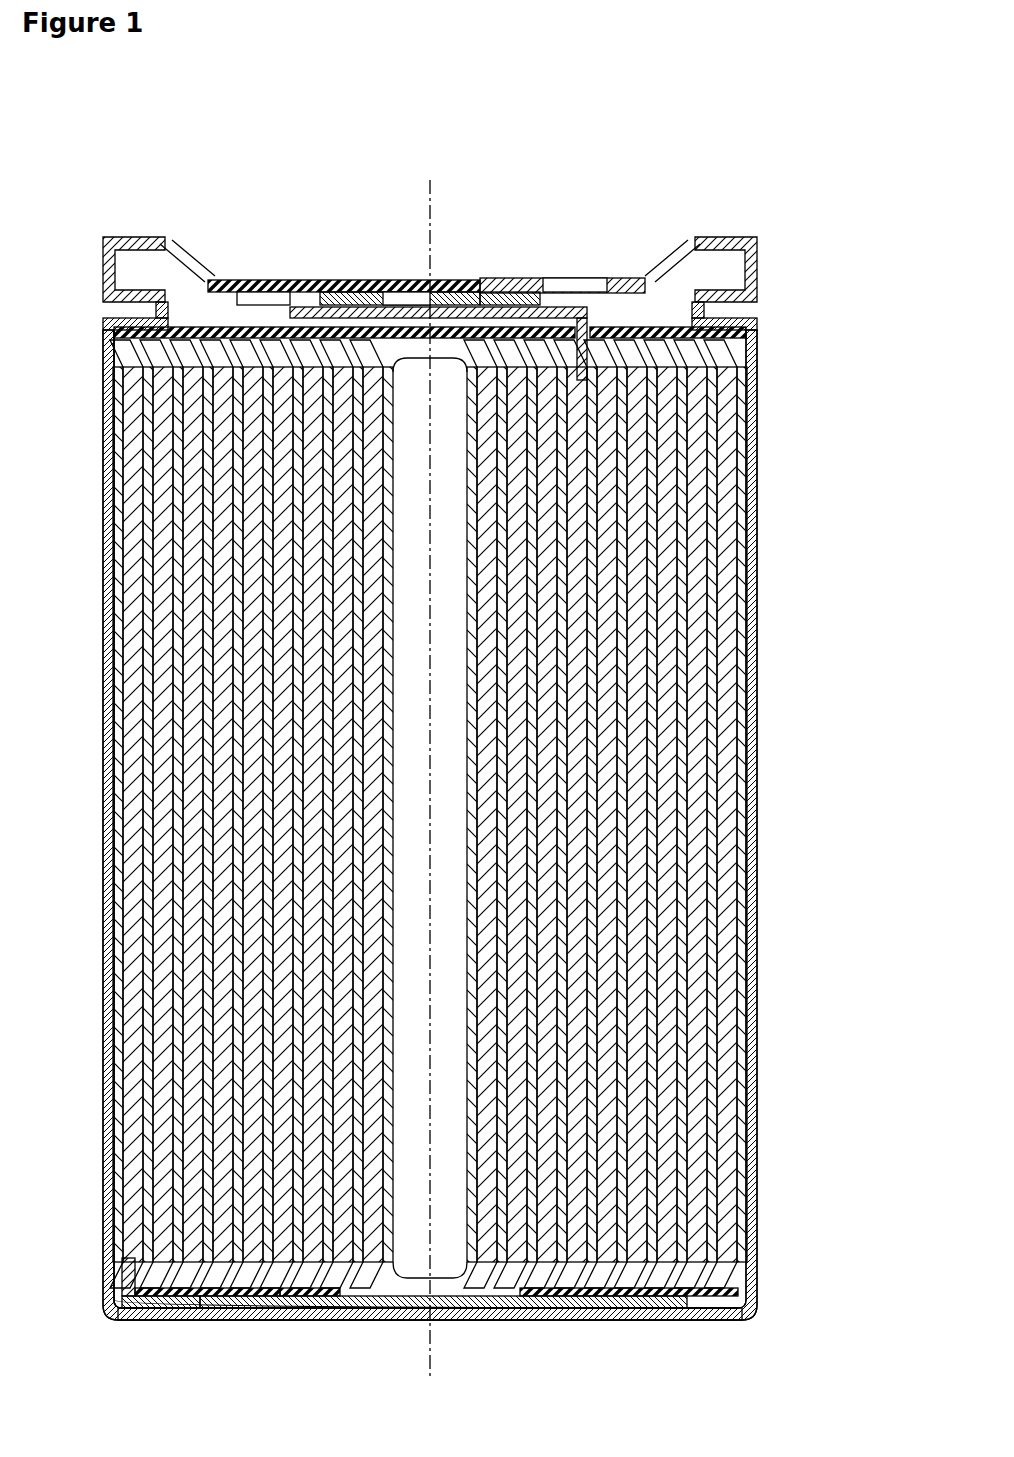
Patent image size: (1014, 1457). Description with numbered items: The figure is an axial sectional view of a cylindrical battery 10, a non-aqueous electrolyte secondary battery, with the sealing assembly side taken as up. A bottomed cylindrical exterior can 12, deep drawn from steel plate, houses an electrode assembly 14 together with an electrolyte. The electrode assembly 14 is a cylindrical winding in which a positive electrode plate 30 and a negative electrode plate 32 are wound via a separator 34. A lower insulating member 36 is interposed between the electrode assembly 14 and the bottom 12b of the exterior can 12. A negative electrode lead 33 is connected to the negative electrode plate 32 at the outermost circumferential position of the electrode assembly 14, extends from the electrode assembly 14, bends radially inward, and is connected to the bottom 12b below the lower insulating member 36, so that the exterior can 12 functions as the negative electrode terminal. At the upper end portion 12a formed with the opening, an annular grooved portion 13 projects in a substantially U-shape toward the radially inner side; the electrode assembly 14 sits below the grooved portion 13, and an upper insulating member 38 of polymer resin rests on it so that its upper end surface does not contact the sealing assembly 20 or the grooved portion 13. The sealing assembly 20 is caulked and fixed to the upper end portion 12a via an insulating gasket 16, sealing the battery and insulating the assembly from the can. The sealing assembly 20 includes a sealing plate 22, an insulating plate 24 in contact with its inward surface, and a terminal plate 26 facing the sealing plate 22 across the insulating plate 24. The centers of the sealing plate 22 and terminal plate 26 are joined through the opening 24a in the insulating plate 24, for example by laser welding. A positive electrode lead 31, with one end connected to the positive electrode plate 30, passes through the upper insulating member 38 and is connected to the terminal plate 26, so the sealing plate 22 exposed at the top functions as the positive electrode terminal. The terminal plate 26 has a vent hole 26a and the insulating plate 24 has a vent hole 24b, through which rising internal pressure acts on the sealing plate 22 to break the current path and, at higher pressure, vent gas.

The cylindrical battery 10 is at (650, 198).
The exterior can 12 is at (104, 456).
The upper end portion 12a is at (762, 263).
The bottom 12b is at (392, 1322).
The grooved portion 13 is at (735, 321).
The electrode assembly 14 is at (112, 535).
The gasket 16 is at (105, 262).
The sealing assembly 20 is at (221, 228).
The sealing plate 22 is at (345, 282).
The insulating plate 24 is at (518, 270).
The opening 24a is at (475, 292).
The vent hole 24b is at (590, 290).
The terminal plate 26 is at (412, 292).
The vent hole 26a is at (262, 300).
The positive electrode plate 30 is at (300, 1300).
The positive electrode lead 31 is at (422, 345).
The negative electrode plate 32 is at (237, 1300).
The negative electrode lead 33 is at (128, 1293).
The separator 34 is at (280, 1310).
The lower insulating member 36 is at (150, 1322).
The upper insulating member 38 is at (112, 336).